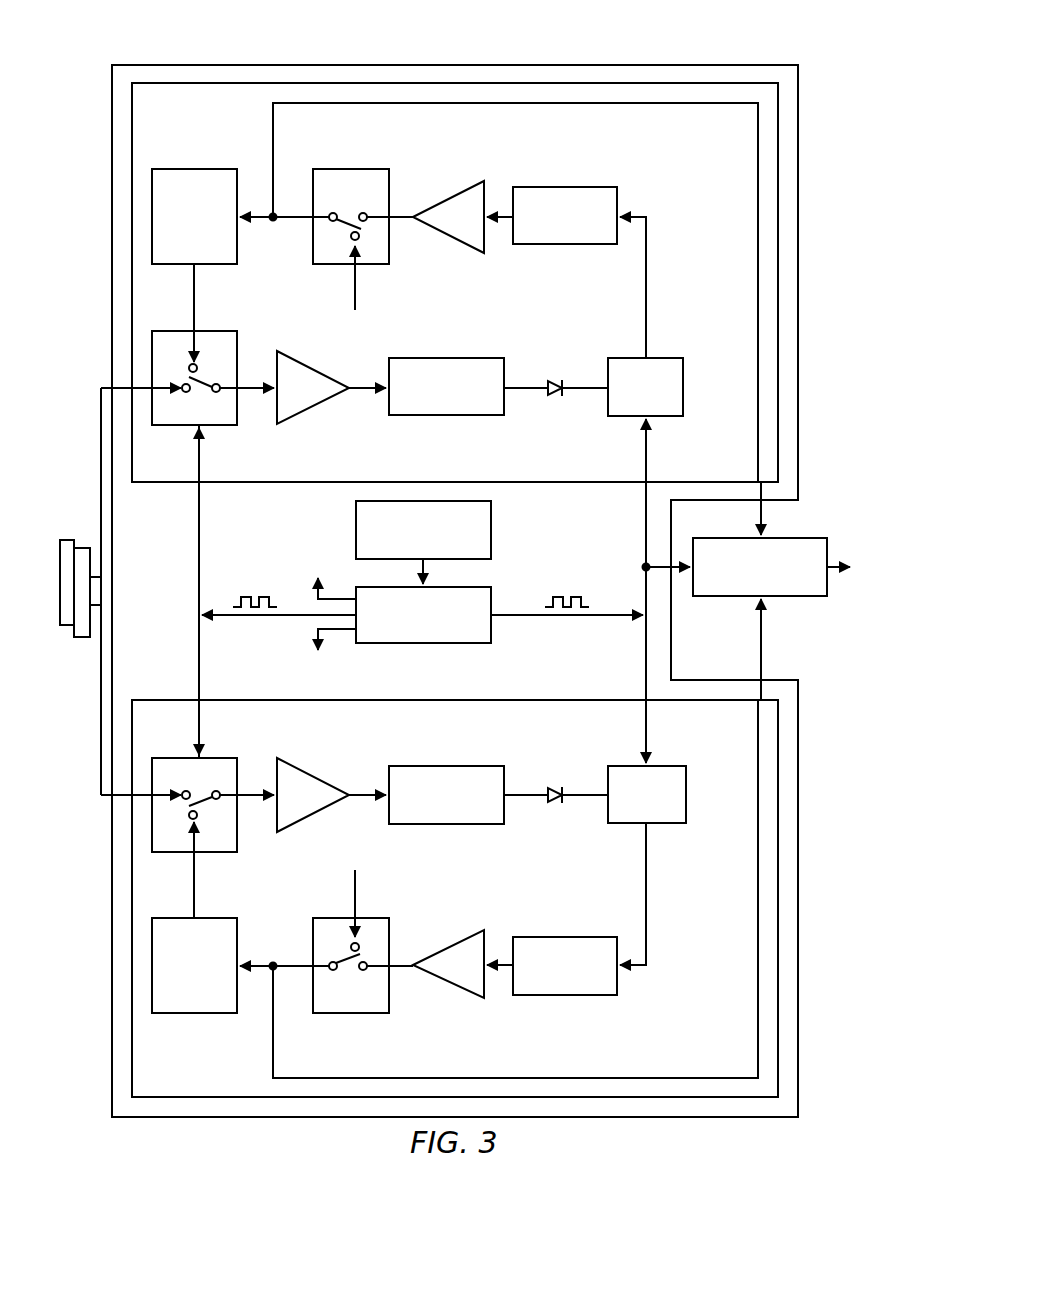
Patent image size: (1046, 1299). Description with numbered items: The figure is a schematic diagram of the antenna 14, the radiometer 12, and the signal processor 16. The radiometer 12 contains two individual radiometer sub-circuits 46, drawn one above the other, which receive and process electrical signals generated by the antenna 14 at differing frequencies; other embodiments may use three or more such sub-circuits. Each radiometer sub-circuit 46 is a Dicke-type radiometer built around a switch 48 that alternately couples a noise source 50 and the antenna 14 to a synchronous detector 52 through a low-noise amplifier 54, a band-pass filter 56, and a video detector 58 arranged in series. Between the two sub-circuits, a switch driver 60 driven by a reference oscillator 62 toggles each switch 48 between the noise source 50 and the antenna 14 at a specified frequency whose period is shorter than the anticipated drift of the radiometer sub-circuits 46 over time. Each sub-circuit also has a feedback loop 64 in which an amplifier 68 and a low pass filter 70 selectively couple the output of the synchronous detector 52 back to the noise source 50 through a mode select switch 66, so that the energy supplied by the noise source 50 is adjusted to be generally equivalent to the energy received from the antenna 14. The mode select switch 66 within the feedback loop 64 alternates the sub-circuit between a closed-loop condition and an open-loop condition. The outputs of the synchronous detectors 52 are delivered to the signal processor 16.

The radiometer 12 is at (337, 62).
The antenna 14 is at (84, 638).
The signal processor 16 is at (783, 598).
The radiometer sub-circuit 46 is at (256, 487).
The switch 48 is at (184, 426).
The noise source 50 is at (186, 168).
The synchronous detector 52 is at (660, 416).
The low-noise amplifier 54 is at (316, 406).
The band-pass filter 56 is at (447, 416).
The video detector 58 is at (555, 397).
The switch driver 60 is at (440, 645).
The reference oscillator 62 is at (493, 528).
The feedback loop 64 is at (272, 140).
The mode select switch 66 is at (340, 265).
The amplifier 68 is at (456, 198).
The low pass filter 70 is at (565, 187).